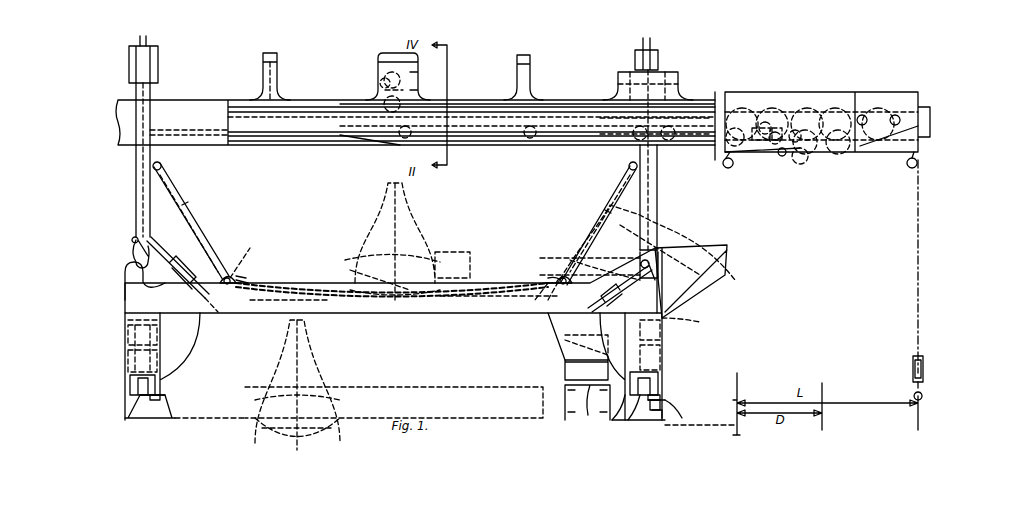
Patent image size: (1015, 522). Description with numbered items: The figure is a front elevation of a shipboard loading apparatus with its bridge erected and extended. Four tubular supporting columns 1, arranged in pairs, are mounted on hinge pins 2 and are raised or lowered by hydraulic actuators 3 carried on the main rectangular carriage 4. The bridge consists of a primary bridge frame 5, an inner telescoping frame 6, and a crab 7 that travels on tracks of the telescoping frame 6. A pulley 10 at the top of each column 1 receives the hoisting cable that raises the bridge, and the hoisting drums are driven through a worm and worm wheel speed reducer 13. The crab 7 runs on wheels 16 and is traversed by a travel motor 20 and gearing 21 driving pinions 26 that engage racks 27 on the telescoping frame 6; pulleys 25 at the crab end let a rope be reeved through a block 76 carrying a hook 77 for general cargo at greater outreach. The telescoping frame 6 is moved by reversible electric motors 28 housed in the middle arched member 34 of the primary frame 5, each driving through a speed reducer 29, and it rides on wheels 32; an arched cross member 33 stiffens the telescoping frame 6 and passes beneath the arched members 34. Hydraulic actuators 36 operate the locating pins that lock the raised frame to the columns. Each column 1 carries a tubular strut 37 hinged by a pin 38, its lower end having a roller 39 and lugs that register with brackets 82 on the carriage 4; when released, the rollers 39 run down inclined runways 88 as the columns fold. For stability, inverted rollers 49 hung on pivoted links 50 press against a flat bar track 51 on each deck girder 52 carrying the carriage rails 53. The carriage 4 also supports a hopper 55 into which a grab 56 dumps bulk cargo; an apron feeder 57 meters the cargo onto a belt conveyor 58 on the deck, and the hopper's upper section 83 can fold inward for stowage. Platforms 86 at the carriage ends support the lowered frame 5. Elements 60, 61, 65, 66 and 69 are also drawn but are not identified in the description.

The tubular supporting columns 1 is at (657, 178).
The hinge pins 2 is at (130, 248).
The hydraulic actuators 3 is at (182, 268).
The main rectangular carriage 4 is at (490, 313).
The primary bridge frame 5 is at (210, 140).
The inner telescoping frame 6 is at (662, 150).
The crab 7 is at (790, 86).
The pulley 10 is at (146, 38).
The worm and worm wheel speed reducer 13 is at (162, 355).
The wheels 16 is at (752, 96).
The travel motor 20 is at (760, 140).
The gearing 21 is at (786, 150).
The pulleys 25 is at (726, 163).
The pinions 26 is at (780, 142).
The racks 27 is at (810, 152).
The reversible electric motors 28 is at (418, 78).
The worm and worm wheel speed reducer 29 is at (380, 78).
The wheels 32 is at (422, 145).
The arched cross member 33 is at (678, 80).
The arched structural member 34 is at (277, 58).
The hydraulic actuators 36 is at (530, 70).
The tubular strut 37 is at (193, 205).
The hinge pin 38 is at (161, 162).
The roller 39 is at (230, 285).
The inverted rollers 49 is at (158, 60).
The pivoted link 50 is at (662, 412).
The flat bar track 51 is at (160, 402).
The deck girder 52 is at (622, 420).
The deck rails 53 is at (686, 390).
The hopper 55 is at (560, 345).
The grab 56 is at (425, 215).
The apron feeder 57 is at (565, 370).
The belt conveyor 58 is at (588, 415).
The cable end 60 is at (548, 287).
The cable guide 61 is at (389, 269).
The track outline 65 is at (394, 402).
The pin 66 is at (160, 398).
The guide 69 is at (678, 419).
The block 76 is at (912, 362).
The hook 77 is at (913, 392).
The brackets 82 is at (247, 278).
The upper section of the hopper 83 is at (705, 300).
The platforms 86 is at (691, 322).
The inclined runways 88 is at (332, 283).